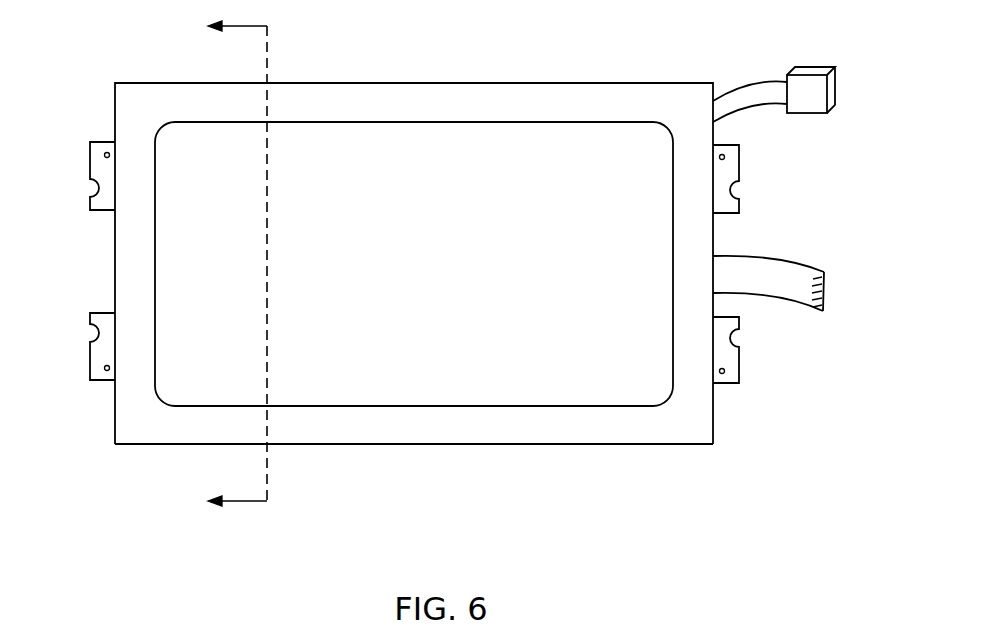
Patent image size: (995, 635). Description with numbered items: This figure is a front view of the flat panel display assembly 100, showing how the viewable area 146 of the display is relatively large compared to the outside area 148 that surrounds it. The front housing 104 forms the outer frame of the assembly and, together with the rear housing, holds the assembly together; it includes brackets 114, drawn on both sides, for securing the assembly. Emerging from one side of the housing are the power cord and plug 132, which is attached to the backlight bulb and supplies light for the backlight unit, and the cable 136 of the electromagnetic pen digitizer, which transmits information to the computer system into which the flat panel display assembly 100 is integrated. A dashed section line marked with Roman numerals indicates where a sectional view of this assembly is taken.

The flat panel display assembly 100 is at (483, 288).
The front housing 104 is at (548, 83).
The brackets 114 is at (98, 208).
The power cord and plug 132 is at (808, 103).
The cable 136 is at (783, 283).
The viewable area 146 is at (478, 242).
The outside area 148 is at (527, 427).